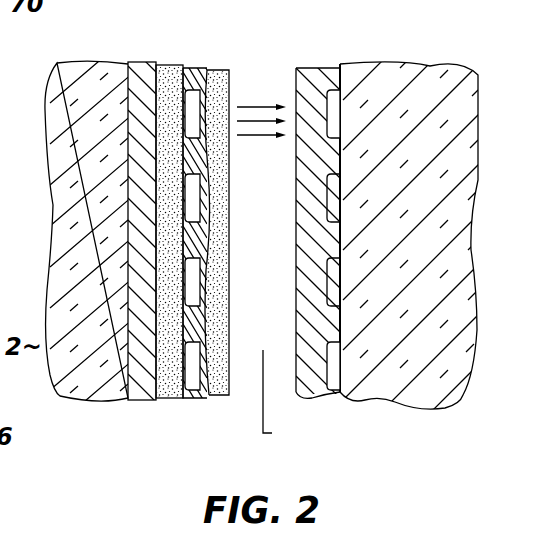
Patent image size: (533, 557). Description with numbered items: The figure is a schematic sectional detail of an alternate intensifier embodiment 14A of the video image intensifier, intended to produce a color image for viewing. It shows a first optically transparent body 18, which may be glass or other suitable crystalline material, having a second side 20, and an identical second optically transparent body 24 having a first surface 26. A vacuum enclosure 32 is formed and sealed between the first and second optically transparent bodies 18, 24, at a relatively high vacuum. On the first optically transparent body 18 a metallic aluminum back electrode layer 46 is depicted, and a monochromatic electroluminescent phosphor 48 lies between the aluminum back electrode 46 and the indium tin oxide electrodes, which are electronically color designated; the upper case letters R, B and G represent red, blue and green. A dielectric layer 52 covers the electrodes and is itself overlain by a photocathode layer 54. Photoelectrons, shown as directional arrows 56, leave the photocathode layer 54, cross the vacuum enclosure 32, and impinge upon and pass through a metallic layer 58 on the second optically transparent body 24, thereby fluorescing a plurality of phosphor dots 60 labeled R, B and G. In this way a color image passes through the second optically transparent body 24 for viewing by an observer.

The first optically transparent body 18 is at (92, 54).
The second side 20 is at (135, 62).
The metallic back electrode layer 46 is at (137, 180).
The monochromatic electroluminescent phosphor 48 is at (163, 67).
The dielectric layer 52 is at (200, 390).
The photocathode layer 54 is at (220, 400).
The red designation R is at (197, 67).
The blue designation B is at (197, 197).
The green designation G is at (195, 290).
The photoelectrons 56 is at (254, 88).
The vacuum enclosure 32 is at (281, 401).
The first surface 26 is at (337, 72).
The metallic layer 58 is at (313, 393).
The second optically transparent body 24 is at (432, 44).
The phosphor dots 60 is at (383, 408).
The alternate intensifier embodiment 14A is at (119, 413).